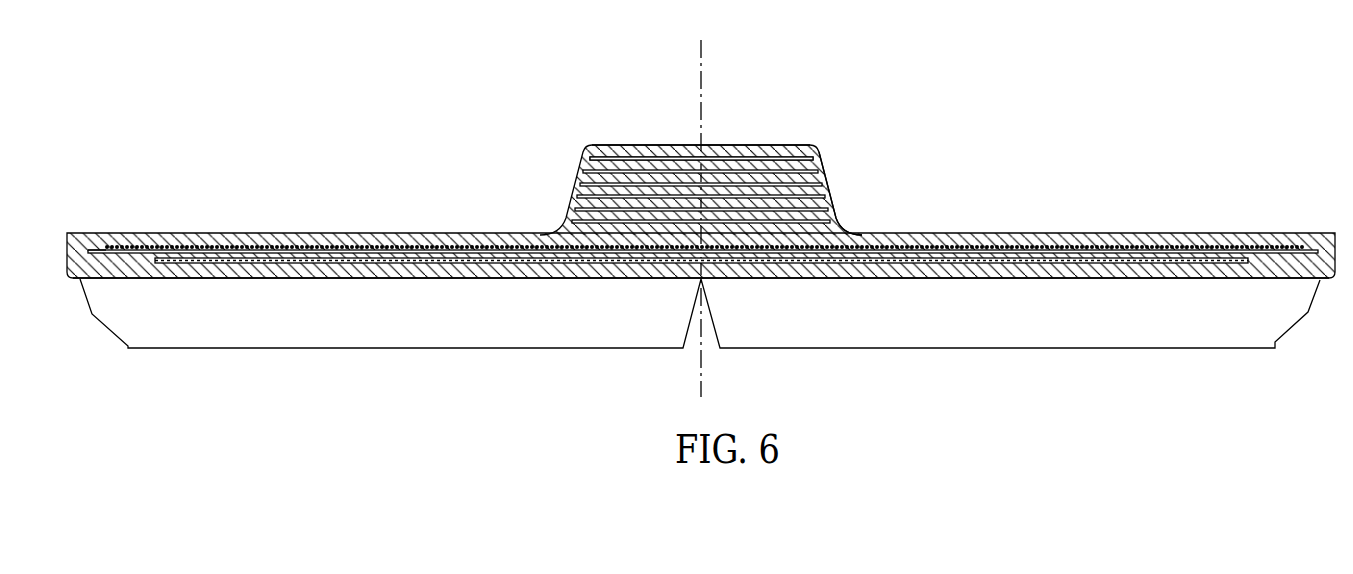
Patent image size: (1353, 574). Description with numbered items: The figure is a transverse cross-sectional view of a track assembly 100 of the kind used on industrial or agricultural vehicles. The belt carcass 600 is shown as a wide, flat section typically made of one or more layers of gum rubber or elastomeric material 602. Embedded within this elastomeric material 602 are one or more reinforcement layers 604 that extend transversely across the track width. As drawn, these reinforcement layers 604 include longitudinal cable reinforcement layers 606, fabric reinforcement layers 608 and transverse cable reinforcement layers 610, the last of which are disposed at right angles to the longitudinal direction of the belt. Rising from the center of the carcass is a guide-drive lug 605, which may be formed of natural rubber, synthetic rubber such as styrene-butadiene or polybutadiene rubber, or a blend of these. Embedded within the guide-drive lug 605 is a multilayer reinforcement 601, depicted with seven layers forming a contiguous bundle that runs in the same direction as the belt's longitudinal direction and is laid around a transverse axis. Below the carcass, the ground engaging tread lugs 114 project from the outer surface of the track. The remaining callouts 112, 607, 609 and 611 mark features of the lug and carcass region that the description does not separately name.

The track assembly 100 is at (138, 86).
The substrate 112 is at (477, 279).
The ground engaging tread lugs 114 is at (401, 350).
The belt carcass 600 is at (701, 210).
The multilayer reinforcement 601 is at (567, 213).
The gum rubber or elastomeric material 602 is at (256, 282).
The reinforcement layers 604 is at (371, 235).
The guide-drive lug 605 is at (730, 144).
The longitudinal cable reinforcement layers 606 is at (287, 241).
The top surface 607 is at (660, 145).
The fabric reinforcement layers 608 is at (95, 241).
The top layer 609 is at (579, 163).
The transverse cable reinforcement layers 610 is at (540, 268).
The side wall 611 is at (832, 178).